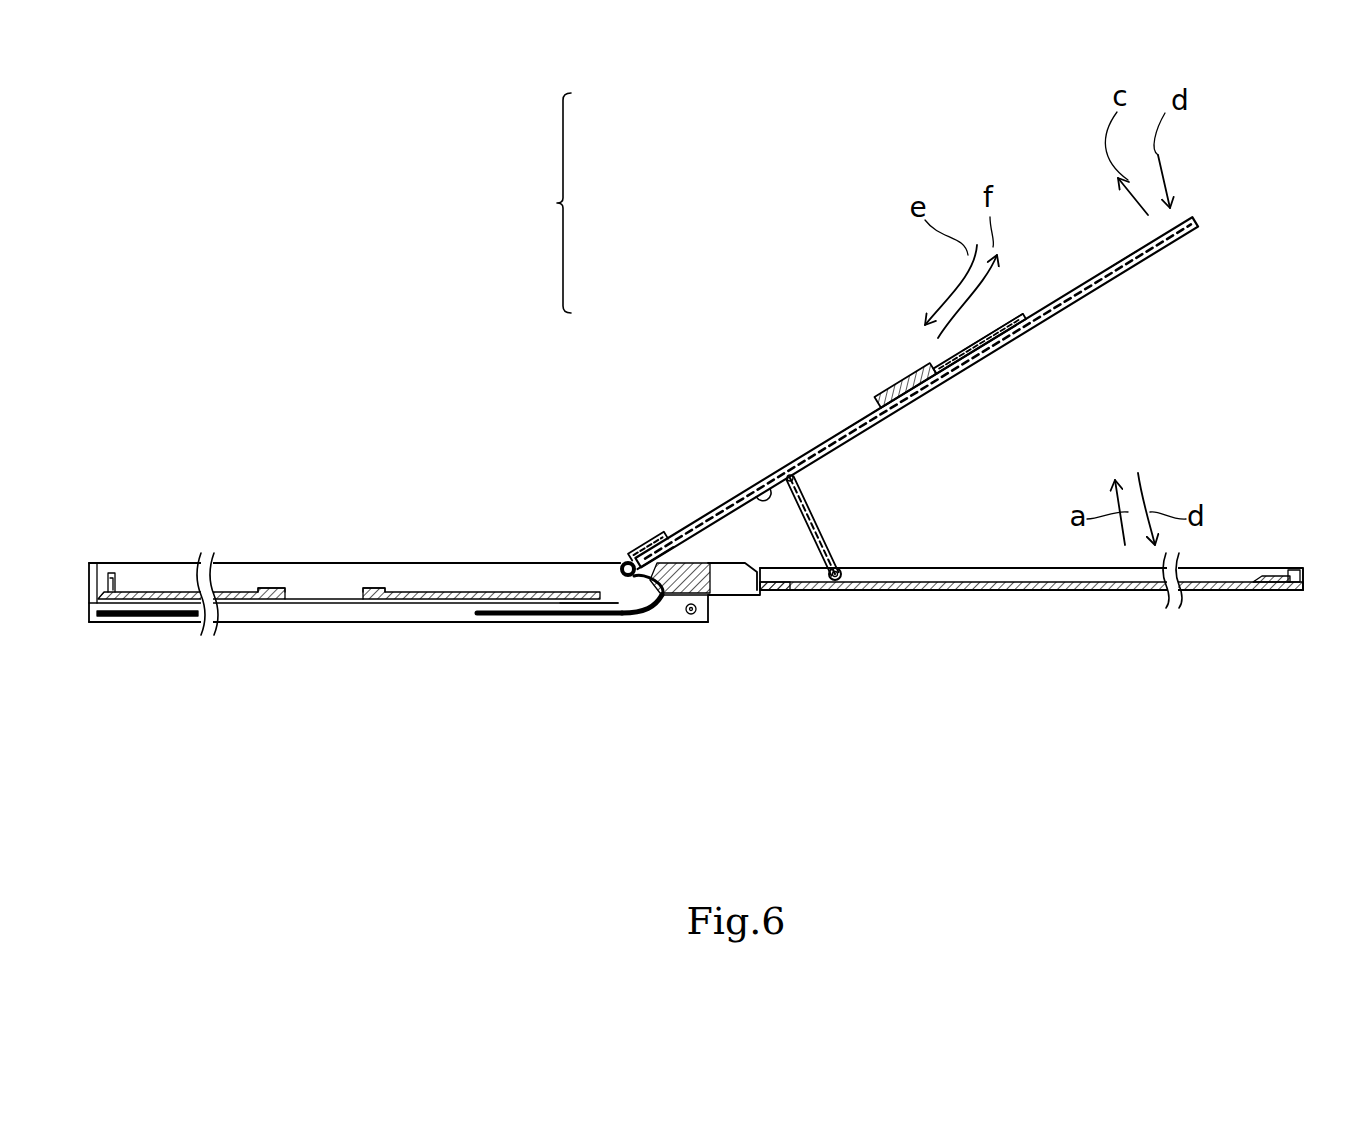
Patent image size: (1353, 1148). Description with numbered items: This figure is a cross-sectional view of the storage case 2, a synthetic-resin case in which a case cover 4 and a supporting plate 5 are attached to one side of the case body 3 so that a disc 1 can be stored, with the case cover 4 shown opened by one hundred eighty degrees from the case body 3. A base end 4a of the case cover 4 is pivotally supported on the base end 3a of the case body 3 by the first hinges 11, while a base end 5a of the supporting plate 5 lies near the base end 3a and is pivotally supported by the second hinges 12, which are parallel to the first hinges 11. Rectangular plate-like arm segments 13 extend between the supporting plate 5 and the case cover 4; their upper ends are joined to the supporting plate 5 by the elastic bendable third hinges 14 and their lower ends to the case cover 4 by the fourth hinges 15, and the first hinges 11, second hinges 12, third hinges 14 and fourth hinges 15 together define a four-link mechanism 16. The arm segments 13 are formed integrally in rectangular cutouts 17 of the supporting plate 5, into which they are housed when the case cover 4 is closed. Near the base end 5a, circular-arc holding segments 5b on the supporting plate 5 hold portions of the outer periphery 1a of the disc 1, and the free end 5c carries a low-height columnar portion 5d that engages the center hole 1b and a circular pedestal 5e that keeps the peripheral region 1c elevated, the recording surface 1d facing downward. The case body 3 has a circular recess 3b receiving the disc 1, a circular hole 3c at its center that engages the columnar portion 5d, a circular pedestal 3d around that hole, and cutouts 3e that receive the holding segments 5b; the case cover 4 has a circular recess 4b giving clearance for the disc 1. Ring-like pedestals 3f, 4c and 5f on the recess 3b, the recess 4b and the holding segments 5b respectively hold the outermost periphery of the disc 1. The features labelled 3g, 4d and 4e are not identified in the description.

The disc 1 is at (1095, 278).
The outer periphery 1a is at (585, 622).
The center hole 1b is at (880, 410).
The peripheral region 1c is at (850, 436).
The recording surface 1d is at (1125, 265).
The storage case 2 is at (397, 375).
The case body 3 is at (334, 548).
The base end 3a is at (640, 612).
The circular recess 3b is at (237, 588).
The circular hole 3c is at (356, 585).
The circular pedestal 3d is at (270, 588).
The cutouts 3e is at (578, 580).
The ring-like pedestal 3f is at (120, 590).
The main body bottom plate 3g is at (339, 624).
The case cover 4 is at (516, 624).
The base end 4a is at (690, 614).
The circular recess 4b is at (1210, 575).
The ring-like pedestal 4c is at (1265, 578).
The base end wall 4e is at (1303, 573).
The base bottom plate 4d is at (100, 627).
The supporting plate 5 is at (957, 403).
The base end 5a is at (620, 572).
The circular-arc holding segments 5b is at (648, 545).
The free end 5c is at (1030, 340).
The columnar portion 5d is at (915, 375).
The circular pedestal 5e is at (990, 370).
The ring-like pedestal 5f is at (672, 566).
The first hinges 11 is at (745, 600).
The second hinges 12 is at (618, 573).
The arm segments 13 is at (822, 520).
The third hinges 14 is at (802, 478).
The fourth hinges 15 is at (838, 586).
The four-link mechanism 16 is at (559, 203).
The rectangular cutouts 17 is at (760, 498).